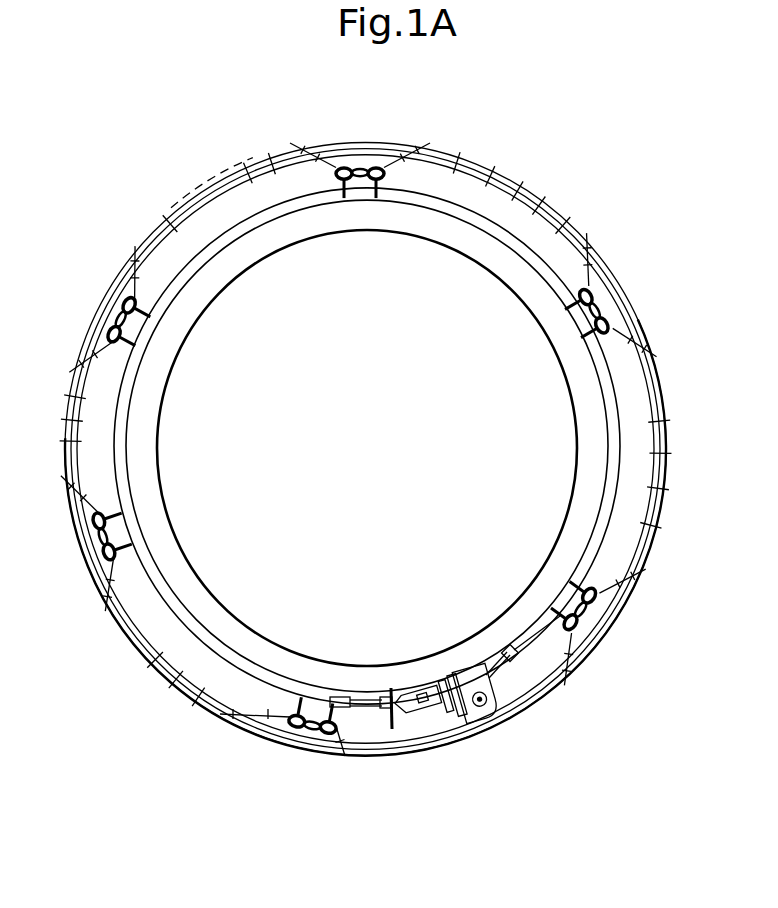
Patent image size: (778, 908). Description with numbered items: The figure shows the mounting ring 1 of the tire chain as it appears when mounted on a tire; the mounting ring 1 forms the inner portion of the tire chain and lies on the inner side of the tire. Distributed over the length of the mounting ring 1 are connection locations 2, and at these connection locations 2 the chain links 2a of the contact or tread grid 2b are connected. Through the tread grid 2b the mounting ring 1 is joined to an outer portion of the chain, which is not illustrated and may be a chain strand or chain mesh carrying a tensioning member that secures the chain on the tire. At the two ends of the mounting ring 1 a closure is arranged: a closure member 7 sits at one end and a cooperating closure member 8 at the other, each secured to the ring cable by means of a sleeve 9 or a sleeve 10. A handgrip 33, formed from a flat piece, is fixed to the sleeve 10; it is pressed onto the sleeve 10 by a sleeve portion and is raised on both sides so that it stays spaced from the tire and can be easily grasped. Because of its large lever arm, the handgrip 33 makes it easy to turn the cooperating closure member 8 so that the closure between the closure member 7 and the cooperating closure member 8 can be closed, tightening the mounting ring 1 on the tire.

The mounting ring 1 is at (500, 220).
The connection locations 2 is at (368, 170).
The chain links 2a is at (421, 162).
The tread grid 2b is at (194, 190).
The closure member 7 is at (417, 713).
The cooperating closure member 8 is at (448, 712).
The sleeve 9 is at (364, 708).
The sleeve 10 is at (499, 669).
The handgrip 33 is at (485, 720).